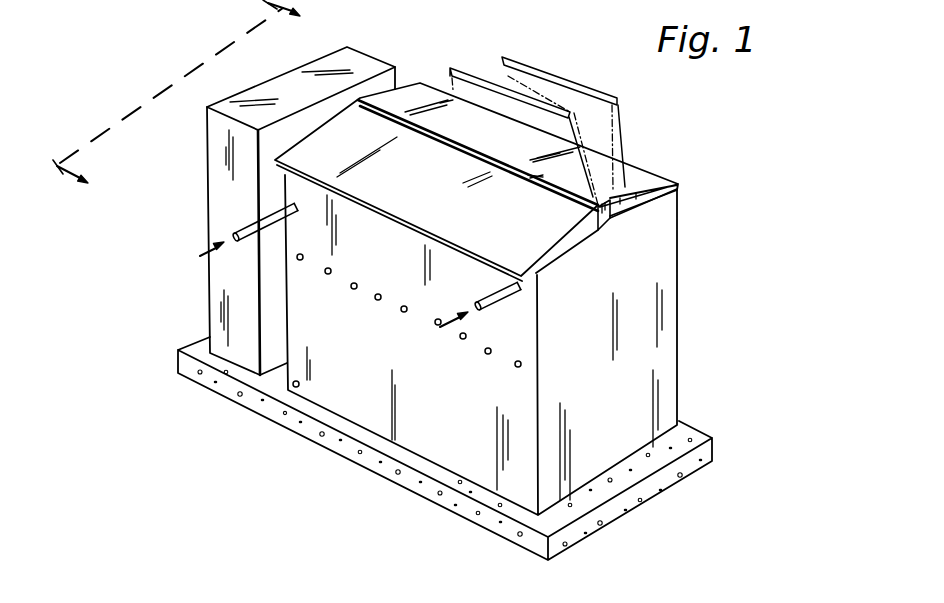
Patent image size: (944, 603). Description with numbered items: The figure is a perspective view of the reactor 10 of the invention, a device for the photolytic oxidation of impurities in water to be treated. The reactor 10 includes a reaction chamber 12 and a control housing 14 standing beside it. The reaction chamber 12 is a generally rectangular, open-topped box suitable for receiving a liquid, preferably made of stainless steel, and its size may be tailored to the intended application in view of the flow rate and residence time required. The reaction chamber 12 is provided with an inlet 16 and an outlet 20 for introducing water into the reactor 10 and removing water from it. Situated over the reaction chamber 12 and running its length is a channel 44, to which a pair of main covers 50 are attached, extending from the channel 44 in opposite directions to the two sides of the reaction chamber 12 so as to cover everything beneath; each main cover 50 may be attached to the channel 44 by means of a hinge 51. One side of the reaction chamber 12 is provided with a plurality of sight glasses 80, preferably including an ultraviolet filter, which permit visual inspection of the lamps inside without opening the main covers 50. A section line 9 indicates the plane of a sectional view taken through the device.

The section line 9- 9 is at (164, 91).
The reactor 10 is at (720, 208).
The reaction chamber 12 is at (655, 331).
The control housing 14 is at (353, 72).
The inlet 16 is at (498, 307).
The outlet 20 is at (248, 223).
The channel 44 is at (605, 213).
The main cover 50 is at (642, 177).
The hinge 51 is at (468, 140).
The sight glass 80 is at (403, 311).